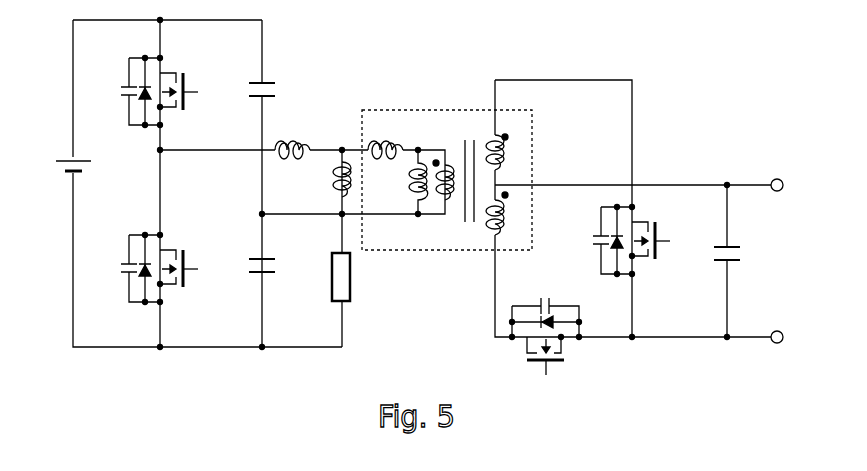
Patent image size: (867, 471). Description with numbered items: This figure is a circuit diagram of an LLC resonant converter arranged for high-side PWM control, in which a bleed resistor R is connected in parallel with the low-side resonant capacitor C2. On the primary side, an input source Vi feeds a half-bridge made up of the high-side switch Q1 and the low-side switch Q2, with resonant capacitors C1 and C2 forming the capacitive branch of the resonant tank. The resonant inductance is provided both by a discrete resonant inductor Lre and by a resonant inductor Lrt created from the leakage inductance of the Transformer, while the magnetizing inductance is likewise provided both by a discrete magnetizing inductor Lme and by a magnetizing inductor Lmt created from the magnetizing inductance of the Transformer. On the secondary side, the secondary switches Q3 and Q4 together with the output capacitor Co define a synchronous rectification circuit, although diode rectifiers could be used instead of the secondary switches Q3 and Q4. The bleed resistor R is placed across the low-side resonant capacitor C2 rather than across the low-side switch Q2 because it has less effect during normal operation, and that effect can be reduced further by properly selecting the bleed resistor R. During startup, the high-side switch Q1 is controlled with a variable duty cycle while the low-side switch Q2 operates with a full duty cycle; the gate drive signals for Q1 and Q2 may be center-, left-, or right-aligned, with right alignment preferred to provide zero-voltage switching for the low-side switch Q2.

The input voltage source Vi is at (61, 166).
The high-side switch Q1 is at (161, 99).
The low-side switch Q2 is at (160, 279).
The secondary switch Q3 is at (553, 343).
The secondary switch Q4 is at (631, 250).
The first resonant capacitor C1 is at (275, 92).
The low-side resonant capacitor C2 is at (275, 267).
The output capacitor Co is at (742, 258).
The resonant inductor Lre is at (292, 140).
The magnetizing inductor Lme is at (321, 180).
The resonant inductor Lrt is at (385, 140).
The magnetizing inductor Lmt is at (403, 182).
The transformer Transformer is at (447, 169).
The bleed resistor R is at (397, 292).